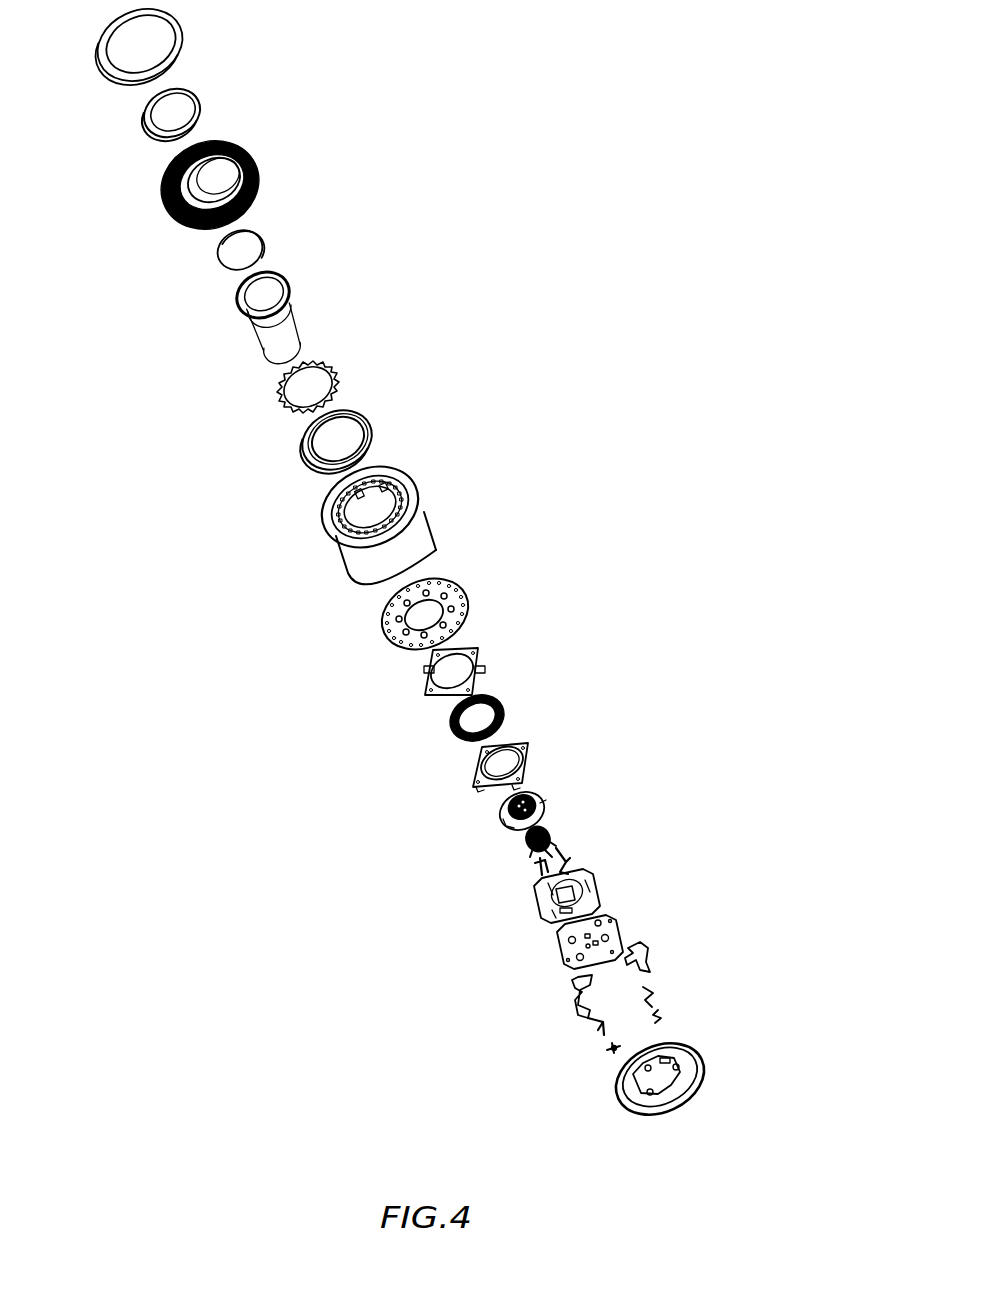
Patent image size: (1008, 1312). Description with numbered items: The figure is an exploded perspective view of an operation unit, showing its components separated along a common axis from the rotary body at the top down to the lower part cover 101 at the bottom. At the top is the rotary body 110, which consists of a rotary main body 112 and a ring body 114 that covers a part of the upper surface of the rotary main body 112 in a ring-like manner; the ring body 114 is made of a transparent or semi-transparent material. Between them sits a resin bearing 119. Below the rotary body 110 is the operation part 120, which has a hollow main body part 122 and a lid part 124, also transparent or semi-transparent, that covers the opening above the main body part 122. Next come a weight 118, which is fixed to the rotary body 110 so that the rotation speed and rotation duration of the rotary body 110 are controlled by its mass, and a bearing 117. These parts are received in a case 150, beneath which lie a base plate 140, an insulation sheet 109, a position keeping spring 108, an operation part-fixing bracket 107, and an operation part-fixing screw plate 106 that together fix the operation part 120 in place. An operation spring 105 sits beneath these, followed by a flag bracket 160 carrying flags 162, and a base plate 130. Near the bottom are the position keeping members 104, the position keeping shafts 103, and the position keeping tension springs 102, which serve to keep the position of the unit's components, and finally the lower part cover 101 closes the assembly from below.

The lower part cover 101 is at (688, 1097).
The position keeping tension springs 102 is at (608, 1053).
The position keeping shafts 103 is at (593, 1027).
The position keeping members 104 is at (570, 997).
The operation spring 105 is at (552, 840).
The operation part-fixing screw plate 106 is at (547, 803).
The operation part-fixing bracket 107 is at (528, 742).
The position keeping spring 108 is at (503, 713).
The insulation sheet 109 is at (477, 652).
The rotary body 110 is at (343, 42).
The rotary main body 112 is at (255, 163).
The ring body 114 is at (183, 35).
The bearing 117 is at (370, 430).
The weight 118 is at (342, 380).
The resin bearing 119 is at (142, 113).
The operation part 120 is at (380, 238).
The main body part 122 is at (292, 297).
The lid part 124 is at (249, 245).
The base plate 130 is at (607, 923).
The base plate 140 is at (468, 603).
The case 150 is at (423, 523).
The flag bracket 160 is at (587, 872).
The flags 162 is at (533, 872).